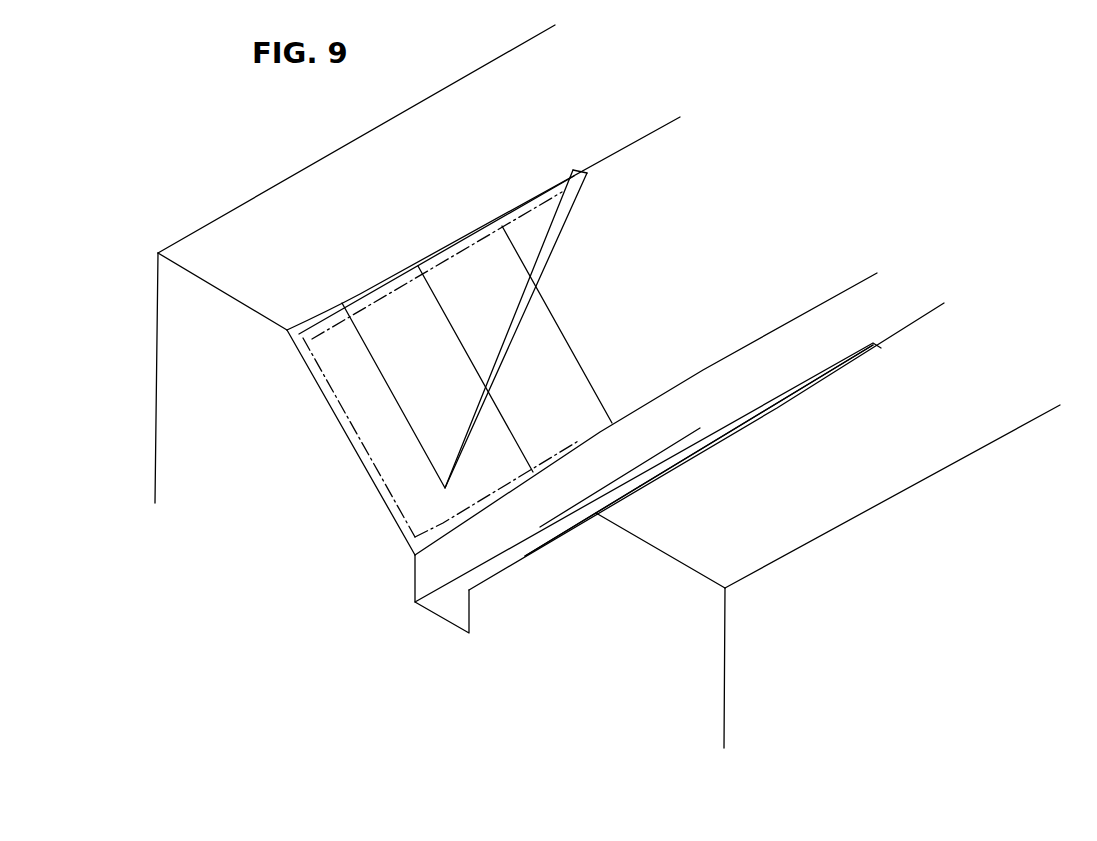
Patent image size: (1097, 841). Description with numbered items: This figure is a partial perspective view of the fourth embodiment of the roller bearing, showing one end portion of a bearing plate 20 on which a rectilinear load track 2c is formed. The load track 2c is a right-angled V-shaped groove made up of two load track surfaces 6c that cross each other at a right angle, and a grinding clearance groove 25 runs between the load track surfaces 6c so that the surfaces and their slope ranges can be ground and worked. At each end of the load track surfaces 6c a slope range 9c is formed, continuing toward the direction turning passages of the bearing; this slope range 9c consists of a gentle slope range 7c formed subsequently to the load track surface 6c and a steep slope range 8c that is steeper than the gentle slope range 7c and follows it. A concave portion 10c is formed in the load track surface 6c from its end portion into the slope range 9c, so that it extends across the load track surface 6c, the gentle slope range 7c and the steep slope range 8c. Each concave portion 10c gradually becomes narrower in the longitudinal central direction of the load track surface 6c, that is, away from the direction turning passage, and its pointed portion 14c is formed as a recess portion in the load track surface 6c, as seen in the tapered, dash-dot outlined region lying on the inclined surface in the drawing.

The load track 2c is at (818, 214).
The load track surface 6c is at (685, 327).
The gentle slope range 7c is at (558, 399).
The steep slope range 8c is at (439, 511).
The slope range 9c is at (652, 612).
The concave portion 10c is at (408, 302).
The pointed portion 14c is at (576, 168).
The bearing plate 20 is at (240, 206).
The grinding clearance groove 25 is at (446, 612).